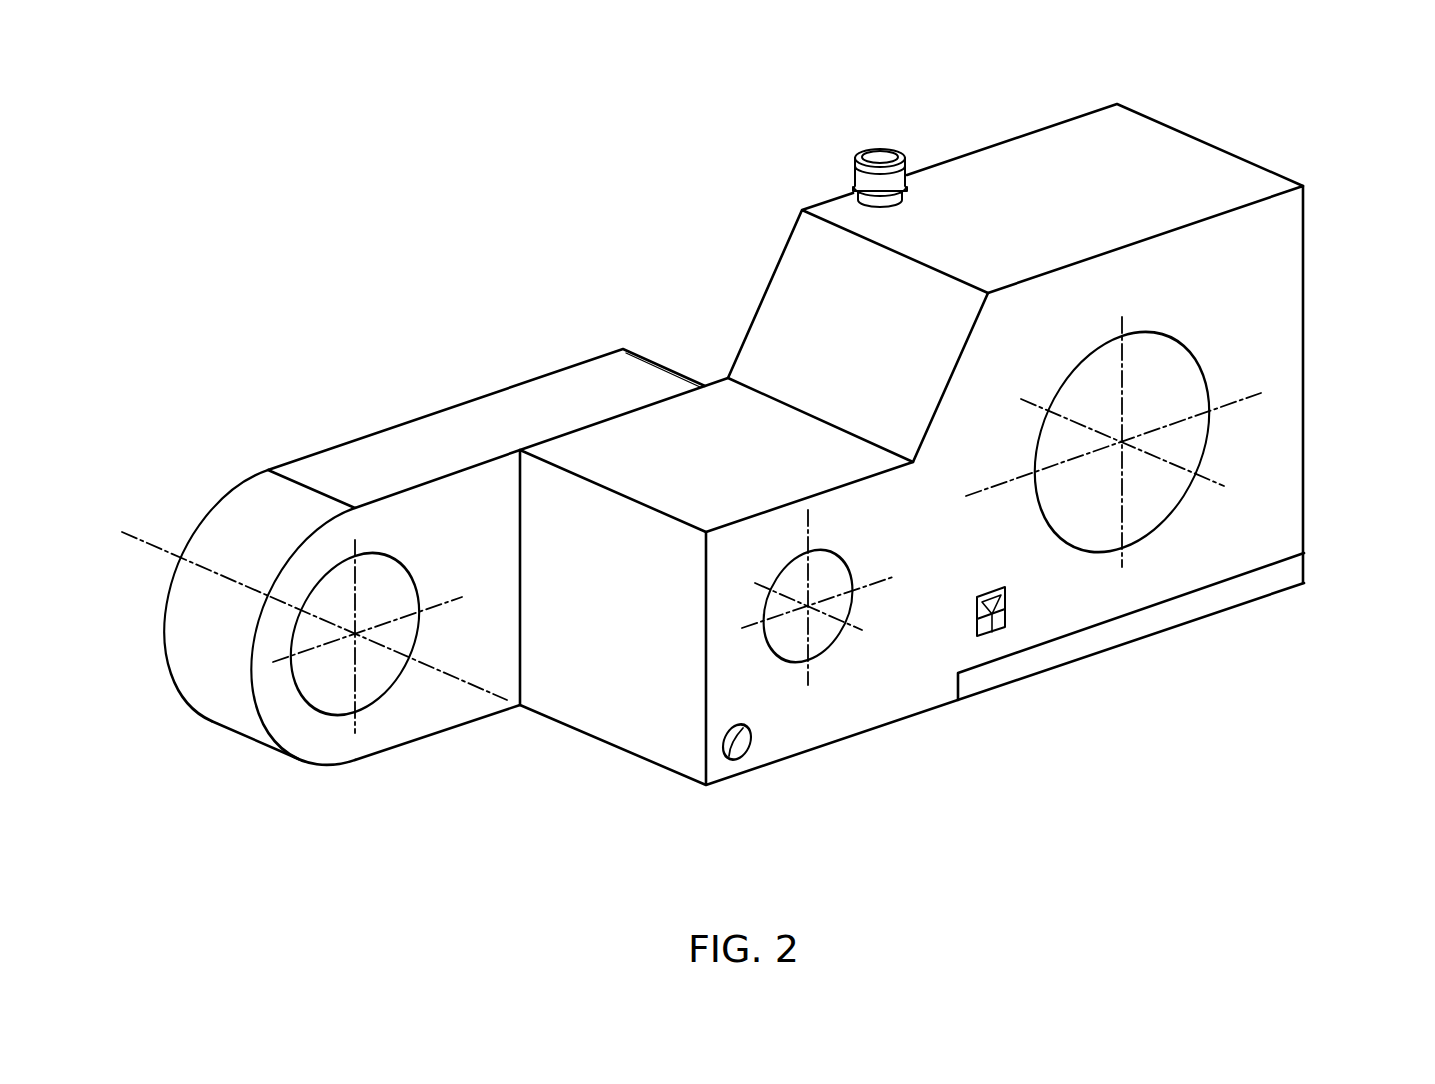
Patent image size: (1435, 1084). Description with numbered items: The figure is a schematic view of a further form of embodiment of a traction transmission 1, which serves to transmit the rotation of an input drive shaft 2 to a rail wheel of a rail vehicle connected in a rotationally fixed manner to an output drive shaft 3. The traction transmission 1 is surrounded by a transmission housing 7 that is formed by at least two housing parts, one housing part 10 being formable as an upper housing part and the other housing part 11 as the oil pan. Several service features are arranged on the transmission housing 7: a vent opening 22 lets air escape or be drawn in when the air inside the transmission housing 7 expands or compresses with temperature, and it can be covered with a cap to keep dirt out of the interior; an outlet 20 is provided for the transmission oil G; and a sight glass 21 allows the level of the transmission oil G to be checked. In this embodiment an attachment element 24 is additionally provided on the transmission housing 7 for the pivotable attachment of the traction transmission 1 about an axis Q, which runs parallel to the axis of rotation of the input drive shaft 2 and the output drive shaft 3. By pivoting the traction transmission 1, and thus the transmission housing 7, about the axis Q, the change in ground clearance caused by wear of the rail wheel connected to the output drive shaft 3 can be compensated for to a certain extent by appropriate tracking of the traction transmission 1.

The traction transmission 1 is at (775, 182).
The input drive shaft 2 is at (808, 608).
The output drive shaft 3 is at (1122, 443).
The transmission housing 7 is at (708, 460).
The housing part 10 is at (1275, 418).
The housing part 11 is at (1279, 578).
The outlet 20 is at (730, 757).
The sight glass 21 is at (983, 628).
The vent opening 22 is at (893, 148).
The attachment element 24 is at (432, 508).
The transmission oil G is at (1000, 623).
The axis Q is at (463, 683).